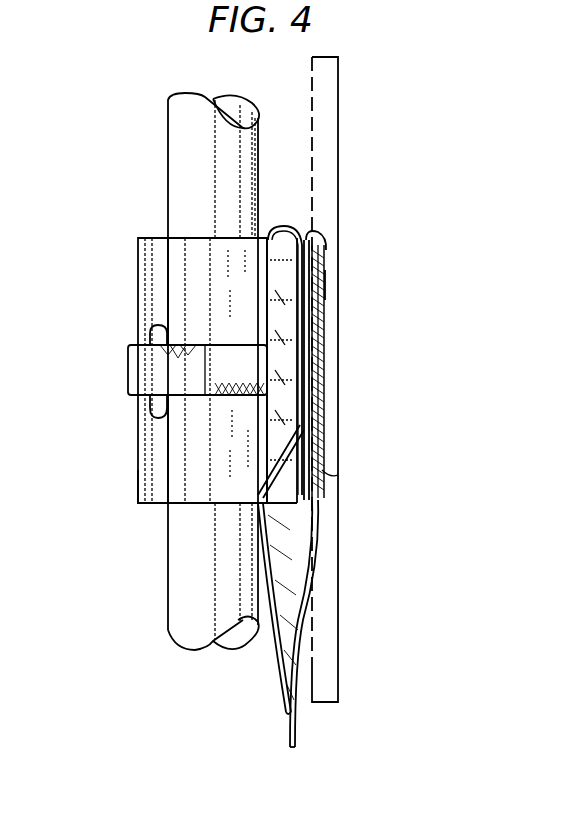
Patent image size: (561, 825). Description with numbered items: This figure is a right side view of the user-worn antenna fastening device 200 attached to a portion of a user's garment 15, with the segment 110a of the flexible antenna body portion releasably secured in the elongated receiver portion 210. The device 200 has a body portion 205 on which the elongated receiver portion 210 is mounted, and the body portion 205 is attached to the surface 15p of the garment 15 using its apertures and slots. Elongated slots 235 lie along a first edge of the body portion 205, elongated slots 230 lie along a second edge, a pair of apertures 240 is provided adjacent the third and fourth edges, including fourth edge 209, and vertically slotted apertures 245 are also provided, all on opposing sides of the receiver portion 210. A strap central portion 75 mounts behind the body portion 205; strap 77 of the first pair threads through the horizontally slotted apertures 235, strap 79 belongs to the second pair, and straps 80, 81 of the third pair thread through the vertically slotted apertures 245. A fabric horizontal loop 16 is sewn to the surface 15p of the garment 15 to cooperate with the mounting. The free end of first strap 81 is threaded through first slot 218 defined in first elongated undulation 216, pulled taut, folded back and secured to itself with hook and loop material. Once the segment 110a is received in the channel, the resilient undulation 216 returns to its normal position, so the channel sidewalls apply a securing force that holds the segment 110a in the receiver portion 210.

The segment 110a is at (160, 152).
The garment 15 is at (340, 580).
The surface 15p is at (310, 62).
The horizontal loop 16 is at (320, 286).
The strap 77 is at (305, 197).
The strap 79 is at (284, 694).
The strap 80 is at (128, 370).
The first strap 81 is at (150, 328).
The user-worn antenna fastening device 200 is at (300, 428).
The body portion 205 is at (306, 322).
The fourth edge 209 is at (322, 400).
The elongated receiver portion 210 is at (195, 290).
The first elongated undulation 216 is at (150, 490).
The first slot 218 is at (145, 408).
The elongated slots 230 is at (322, 508).
The elongated slots 235 is at (320, 236).
The apertures 240 is at (322, 372).
The elongated slots 245 is at (314, 348).
The strap central portion 75 is at (325, 488).